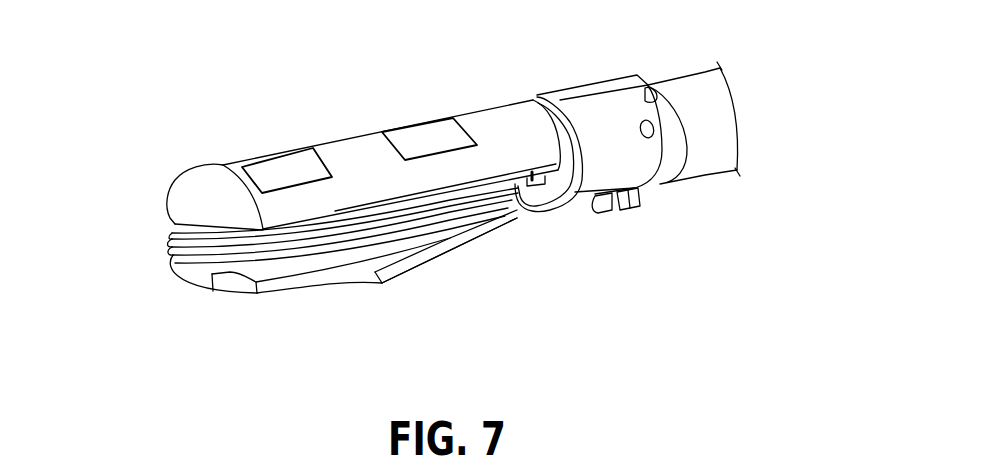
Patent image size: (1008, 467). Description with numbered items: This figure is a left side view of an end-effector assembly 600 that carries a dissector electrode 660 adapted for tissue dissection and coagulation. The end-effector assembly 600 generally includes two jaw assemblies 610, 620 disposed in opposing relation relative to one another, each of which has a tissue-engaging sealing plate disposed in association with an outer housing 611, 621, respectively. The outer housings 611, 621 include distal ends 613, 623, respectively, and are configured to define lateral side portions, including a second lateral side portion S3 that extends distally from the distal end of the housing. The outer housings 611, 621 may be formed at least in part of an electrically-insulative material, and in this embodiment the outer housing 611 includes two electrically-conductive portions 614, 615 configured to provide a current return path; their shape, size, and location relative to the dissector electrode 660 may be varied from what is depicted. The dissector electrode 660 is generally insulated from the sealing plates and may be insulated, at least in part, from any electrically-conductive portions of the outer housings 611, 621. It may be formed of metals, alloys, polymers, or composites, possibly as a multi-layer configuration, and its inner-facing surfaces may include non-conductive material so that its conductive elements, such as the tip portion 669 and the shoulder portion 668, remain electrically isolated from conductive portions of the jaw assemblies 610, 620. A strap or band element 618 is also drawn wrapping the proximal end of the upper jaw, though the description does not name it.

The end-effector assembly 600 is at (188, 47).
The jaw assembly 610 is at (235, 123).
The outer housing 611 is at (205, 178).
The distal end 613 is at (178, 207).
The electrically-conductive portion 614 is at (292, 163).
The electrically-conductive portion 615 is at (432, 128).
The strap / band 618 is at (506, 212).
The jaw assembly 620 is at (264, 328).
The outer housing 621 is at (200, 295).
The distal end 623 is at (180, 262).
The dissector electrode 660 is at (350, 285).
The shoulder portion 668 is at (290, 284).
The tip portion 669 is at (227, 284).
The second lateral side portion S3 is at (430, 252).